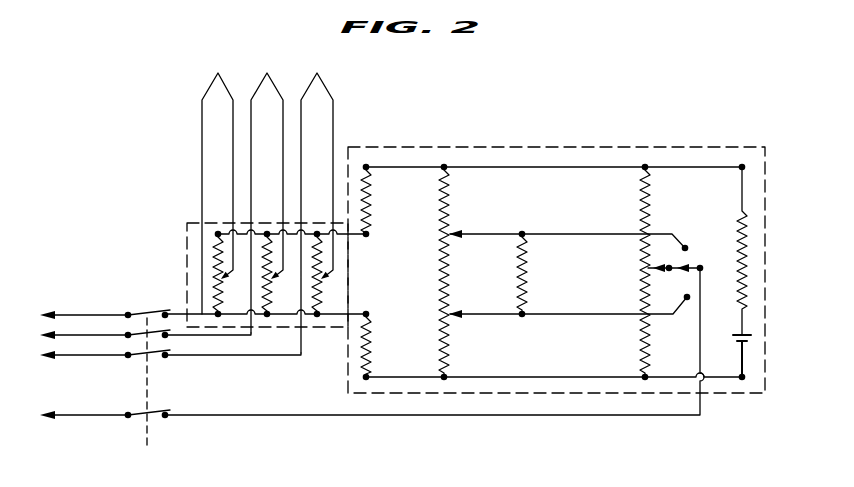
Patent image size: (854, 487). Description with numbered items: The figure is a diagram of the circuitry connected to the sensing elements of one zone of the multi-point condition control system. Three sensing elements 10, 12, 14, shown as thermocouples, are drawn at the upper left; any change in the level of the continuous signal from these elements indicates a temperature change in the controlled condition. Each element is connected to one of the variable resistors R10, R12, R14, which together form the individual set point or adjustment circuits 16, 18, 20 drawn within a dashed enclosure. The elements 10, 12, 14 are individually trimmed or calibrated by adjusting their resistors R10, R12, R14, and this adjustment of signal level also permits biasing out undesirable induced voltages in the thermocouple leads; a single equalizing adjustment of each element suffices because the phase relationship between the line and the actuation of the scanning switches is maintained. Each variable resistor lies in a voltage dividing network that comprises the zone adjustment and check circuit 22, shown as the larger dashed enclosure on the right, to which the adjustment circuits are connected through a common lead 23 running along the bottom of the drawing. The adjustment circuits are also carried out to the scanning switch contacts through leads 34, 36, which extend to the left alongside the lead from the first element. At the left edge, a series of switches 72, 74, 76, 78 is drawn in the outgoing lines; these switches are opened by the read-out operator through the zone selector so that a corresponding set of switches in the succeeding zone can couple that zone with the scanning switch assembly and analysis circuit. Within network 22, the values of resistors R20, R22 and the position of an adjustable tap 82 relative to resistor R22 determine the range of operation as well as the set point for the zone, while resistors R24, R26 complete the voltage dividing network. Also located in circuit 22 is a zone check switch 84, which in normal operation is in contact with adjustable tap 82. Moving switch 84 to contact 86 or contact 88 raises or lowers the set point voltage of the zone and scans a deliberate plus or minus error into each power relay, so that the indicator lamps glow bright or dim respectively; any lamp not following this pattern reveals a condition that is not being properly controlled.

The sensing element 10 is at (209, 88).
The sensing element 12 is at (259, 87).
The sensing element 14 is at (309, 87).
The set point or adjustment circuit 16 is at (214, 275).
The set point or adjustment circuit 18 is at (284, 274).
The set point or adjustment circuit 20 is at (334, 274).
The zone adjustment and check circuit 22 is at (556, 251).
The common lead 23 is at (266, 417).
The lead 34 is at (196, 337).
The lead 36 is at (247, 355).
The switch 72 is at (128, 313).
The switch 74 is at (105, 334).
The switch 76 is at (128, 358).
The switch 78 is at (128, 418).
The adjustable tap 82 is at (660, 270).
The zone check switch 84 is at (690, 266).
The contact 86 is at (686, 246).
The contact 88 is at (686, 298).
The variable resistor R10 is at (235, 274).
The variable resistor R12 is at (284, 274).
The variable resistor R14 is at (334, 274).
The resistor R20 is at (740, 222).
The resistor R22 is at (650, 200).
The resistor R24 is at (449, 205).
The resistor R26 is at (527, 265).